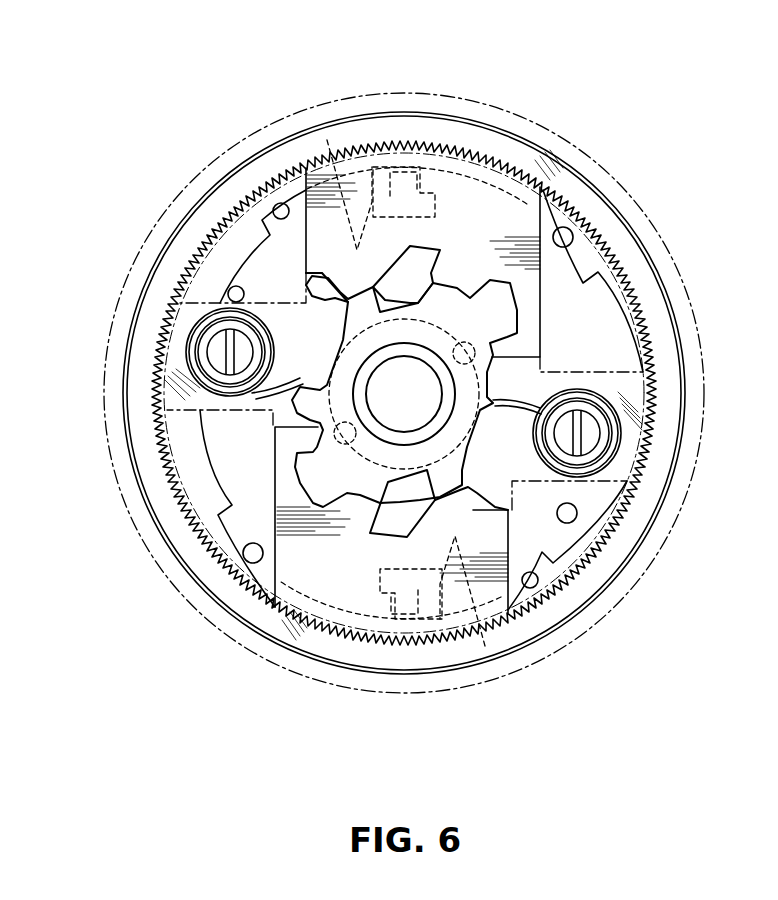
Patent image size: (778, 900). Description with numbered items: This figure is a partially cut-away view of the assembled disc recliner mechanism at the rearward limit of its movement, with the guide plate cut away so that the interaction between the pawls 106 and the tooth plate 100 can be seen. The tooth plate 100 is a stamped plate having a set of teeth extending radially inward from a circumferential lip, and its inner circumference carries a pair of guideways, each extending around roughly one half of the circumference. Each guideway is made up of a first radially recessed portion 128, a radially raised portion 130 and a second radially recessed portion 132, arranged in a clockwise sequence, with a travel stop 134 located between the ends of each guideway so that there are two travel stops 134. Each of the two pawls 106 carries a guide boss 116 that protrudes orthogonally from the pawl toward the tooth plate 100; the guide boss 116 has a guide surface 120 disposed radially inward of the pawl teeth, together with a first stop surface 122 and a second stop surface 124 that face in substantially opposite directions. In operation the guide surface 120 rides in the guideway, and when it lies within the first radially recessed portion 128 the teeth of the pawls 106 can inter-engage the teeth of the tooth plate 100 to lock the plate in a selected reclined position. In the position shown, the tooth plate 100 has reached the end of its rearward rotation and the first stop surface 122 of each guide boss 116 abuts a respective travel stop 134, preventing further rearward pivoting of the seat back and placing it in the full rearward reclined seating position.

The tooth plate 100 is at (155, 362).
The pawl 106 is at (487, 237).
The guide boss 116 is at (437, 207).
The guide surface 120 is at (415, 172).
The first stop surface 122 is at (303, 165).
The second stop surface 124 is at (482, 180).
The first radially recessed portion 128 is at (567, 243).
The radially raised portion 130 is at (223, 297).
The second radially recessed portion 132 is at (270, 212).
The travel stop 134 is at (327, 140).